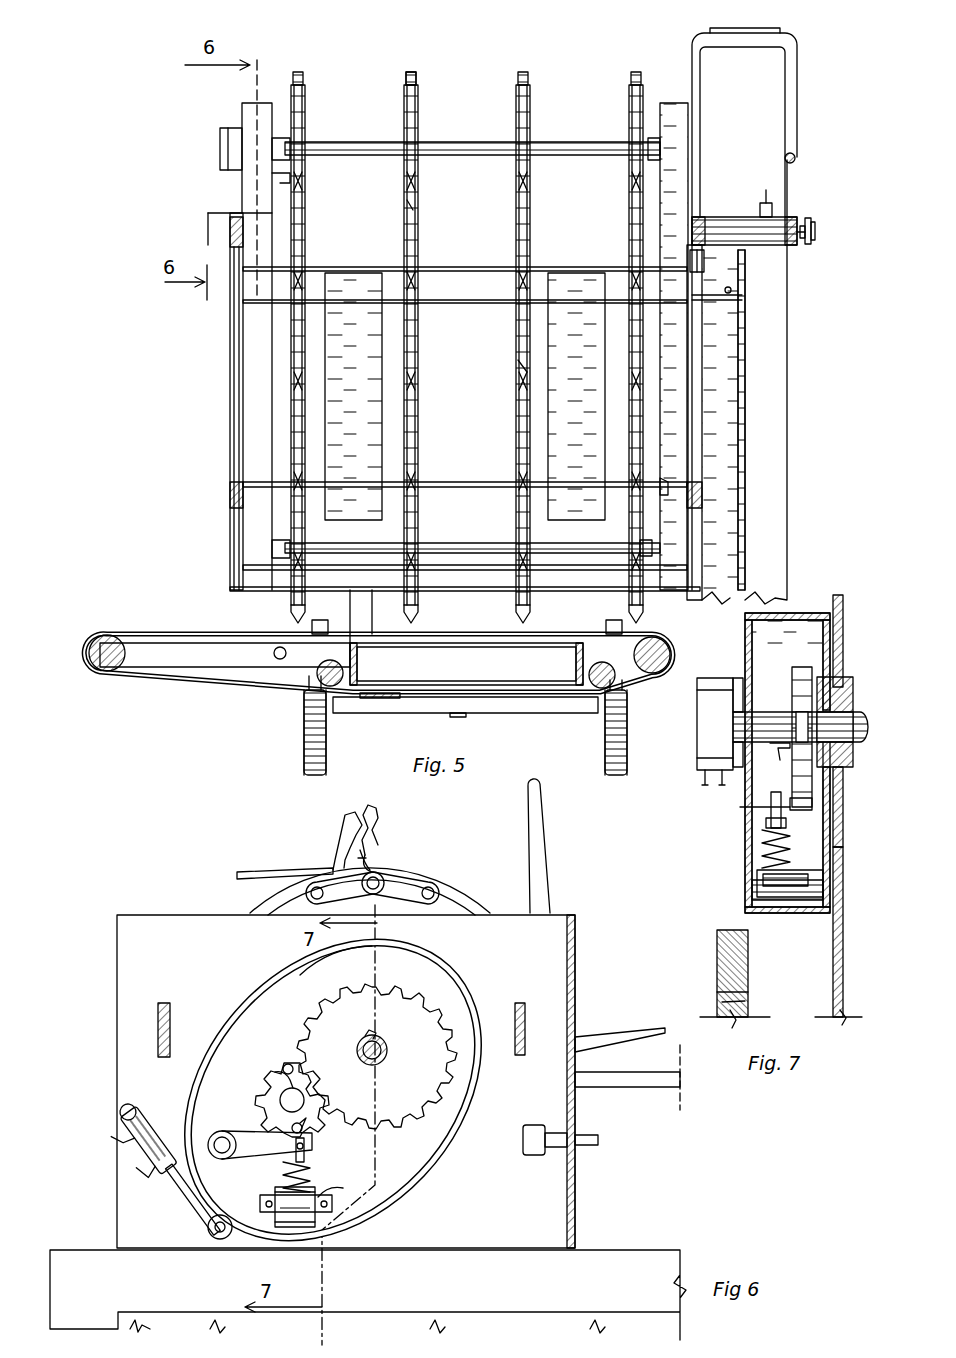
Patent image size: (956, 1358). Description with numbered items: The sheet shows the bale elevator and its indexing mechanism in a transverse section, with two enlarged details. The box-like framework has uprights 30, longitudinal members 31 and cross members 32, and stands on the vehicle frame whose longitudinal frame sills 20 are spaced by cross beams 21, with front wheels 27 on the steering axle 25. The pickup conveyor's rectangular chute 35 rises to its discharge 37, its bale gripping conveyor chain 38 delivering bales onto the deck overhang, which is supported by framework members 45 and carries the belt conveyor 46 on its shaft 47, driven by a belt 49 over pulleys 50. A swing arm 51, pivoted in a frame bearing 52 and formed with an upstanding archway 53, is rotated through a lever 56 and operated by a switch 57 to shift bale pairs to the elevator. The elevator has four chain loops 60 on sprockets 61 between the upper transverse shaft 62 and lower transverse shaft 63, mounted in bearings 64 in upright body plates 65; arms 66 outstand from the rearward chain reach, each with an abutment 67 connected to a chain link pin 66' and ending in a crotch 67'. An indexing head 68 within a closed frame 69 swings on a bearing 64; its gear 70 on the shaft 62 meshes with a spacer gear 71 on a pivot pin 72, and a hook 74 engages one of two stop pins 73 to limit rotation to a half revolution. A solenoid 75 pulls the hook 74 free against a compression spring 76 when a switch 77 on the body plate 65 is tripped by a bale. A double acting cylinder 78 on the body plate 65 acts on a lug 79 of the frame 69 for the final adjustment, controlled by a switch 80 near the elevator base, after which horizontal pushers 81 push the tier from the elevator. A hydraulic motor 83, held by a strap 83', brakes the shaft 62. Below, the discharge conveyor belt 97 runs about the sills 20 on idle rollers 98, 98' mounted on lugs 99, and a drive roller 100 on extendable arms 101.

In FIG. 5, the longitudinal frame sills 20 is at (358, 662).
In FIG. 5, the cross beams 21 is at (450, 640).
In FIG. 5, the steering axle 25 is at (415, 710).
In FIG. 5, the front wheels 27 is at (308, 750).
In FIG. 5, the uprights 30 is at (232, 420).
In FIG. 7, the uprights 30 is at (717, 993).
In FIG. 6, the uprights 30 is at (52, 1290).
In FIG. 7, the longitudinal members 31 is at (722, 960).
In FIG. 6, the longitudinal members 31 is at (628, 1248).
In FIG. 5, the cross members 32 is at (452, 279).
In FIG. 5, the rectangular chute 35 is at (790, 398).
In FIG. 5, the discharge 37 is at (780, 170).
In FIG. 5, the bale gripping conveyor chain 38 is at (748, 505).
In FIG. 5, the framework members 45 is at (800, 243).
In FIG. 5, the belt conveyor 46 is at (728, 205).
In FIG. 5, the shaft 47 is at (812, 228).
In FIG. 5, the belt 49 is at (810, 218).
In FIG. 5, the pulleys 50 is at (815, 235).
In FIG. 5, the swing arm 51 is at (796, 157).
In FIG. 6, the swing arm 51 is at (635, 1088).
In FIG. 5, the frame bearing 52 is at (705, 262).
In FIG. 5, the upstanding archway 53 is at (775, 33).
In FIG. 6, the upstanding archway 53 is at (540, 808).
In FIG. 5, the lever 56 is at (745, 300).
In FIG. 5, the switch 57 is at (766, 190).
In FIG. 5, the chain loops 60 is at (305, 243).
In FIG. 6, the chain loops 60 is at (420, 880).
In FIG. 6, the sprockets 61 is at (395, 883).
In FIG. 5, the upper transverse shaft 62 is at (452, 153).
In FIG. 7, the upper transverse shaft 62 is at (778, 716).
In FIG. 6, the upper transverse shaft 62 is at (383, 1053).
In FIG. 5, the lower transverse shaft 63 is at (452, 550).
In FIG. 5, the bearings 64 is at (290, 140).
In FIG. 7, the bearings 64 is at (845, 775).
In FIG. 5, the body plates 65 is at (247, 198).
In FIG. 7, the body plates 65 is at (836, 962).
In FIG. 5, the arms 66 is at (489, 276).
In FIG. 6, the arms 66 is at (451, 945).
In FIG. 6, the chain link pin 66' is at (388, 854).
In FIG. 5, the abutment 67 is at (430, 72).
In FIG. 6, the abutment 67 is at (338, 837).
In FIG. 6, the crotch 67' is at (385, 817).
In FIG. 7, the indexing head 68 is at (737, 891).
In FIG. 6, the indexing head 68 is at (459, 974).
In FIG. 7, the closed frame 69 is at (812, 913).
In FIG. 6, the closed frame 69 is at (290, 985).
In FIG. 7, the gear 70 is at (797, 670).
In FIG. 6, the gear 70 is at (380, 990).
In FIG. 7, the spacer gear 71 is at (797, 812).
In FIG. 6, the spacer gear 71 is at (262, 1095).
In FIG. 6, the pivot pin 72 is at (275, 1068).
In FIG. 7, the stop pins 73 is at (784, 762).
In FIG. 6, the stop pins 73 is at (296, 1048).
In FIG. 7, the hook 74 is at (742, 807).
In FIG. 6, the hook 74 is at (272, 1150).
In FIG. 7, the solenoid 75 is at (762, 880).
In FIG. 6, the solenoid 75 is at (275, 1198).
In FIG. 7, the compression spring 76 is at (765, 850).
In FIG. 6, the compression spring 76 is at (312, 1172).
In FIG. 5, the switch 77 is at (292, 180).
In FIG. 6, the switch 77 is at (533, 1128).
In FIG. 6, the double acting cylinder 78 is at (165, 1100).
In FIG. 6, the lug 79 is at (208, 1230).
In FIG. 5, the switch 80 is at (668, 484).
In FIG. 5, the horizontal pushers 81 is at (355, 280).
In FIG. 5, the hydraulic motor 83 is at (215, 149).
In FIG. 7, the hydraulic motor 83 is at (703, 731).
In FIG. 7, the strap 83' is at (724, 710).
In FIG. 6, the strap 83' is at (183, 1021).
In FIG. 5, the conveyor belt 97 is at (480, 640).
In FIG. 5, the idle roller 98 is at (669, 646).
In FIG. 5, the idle roller 98' is at (458, 695).
In FIG. 5, the lugs 99 is at (640, 680).
In FIG. 5, the drive roller 100 is at (105, 670).
In FIG. 5, the extendable arms 101 is at (210, 658).